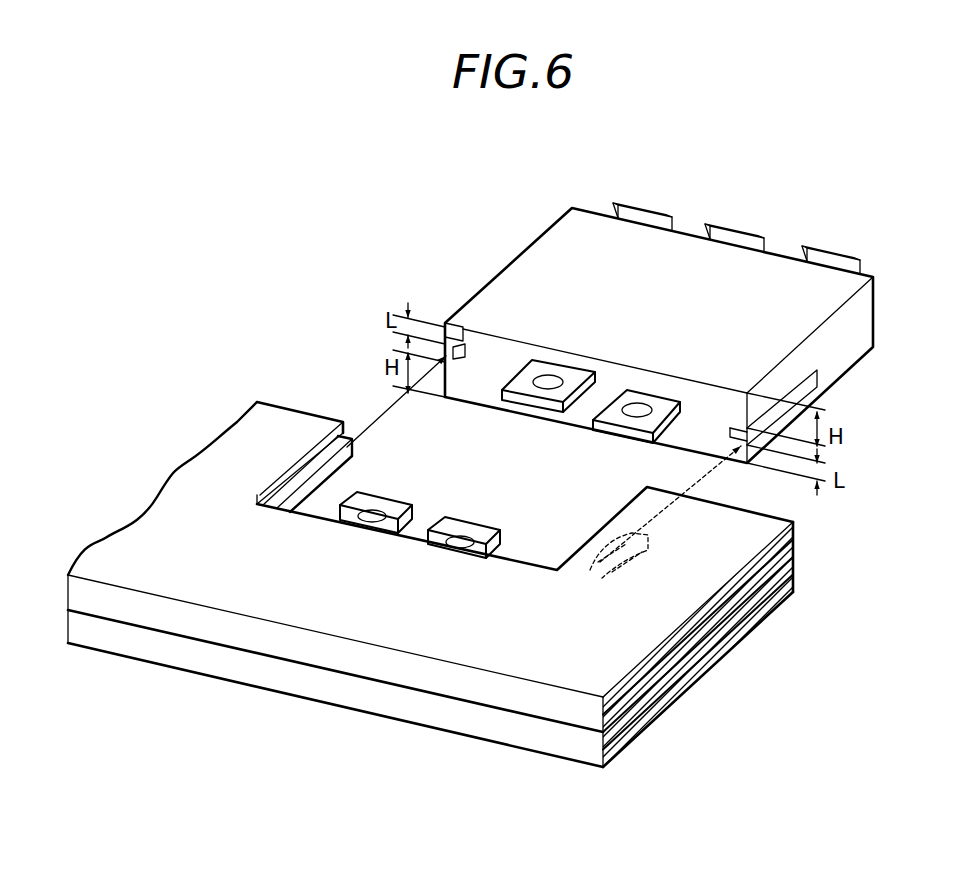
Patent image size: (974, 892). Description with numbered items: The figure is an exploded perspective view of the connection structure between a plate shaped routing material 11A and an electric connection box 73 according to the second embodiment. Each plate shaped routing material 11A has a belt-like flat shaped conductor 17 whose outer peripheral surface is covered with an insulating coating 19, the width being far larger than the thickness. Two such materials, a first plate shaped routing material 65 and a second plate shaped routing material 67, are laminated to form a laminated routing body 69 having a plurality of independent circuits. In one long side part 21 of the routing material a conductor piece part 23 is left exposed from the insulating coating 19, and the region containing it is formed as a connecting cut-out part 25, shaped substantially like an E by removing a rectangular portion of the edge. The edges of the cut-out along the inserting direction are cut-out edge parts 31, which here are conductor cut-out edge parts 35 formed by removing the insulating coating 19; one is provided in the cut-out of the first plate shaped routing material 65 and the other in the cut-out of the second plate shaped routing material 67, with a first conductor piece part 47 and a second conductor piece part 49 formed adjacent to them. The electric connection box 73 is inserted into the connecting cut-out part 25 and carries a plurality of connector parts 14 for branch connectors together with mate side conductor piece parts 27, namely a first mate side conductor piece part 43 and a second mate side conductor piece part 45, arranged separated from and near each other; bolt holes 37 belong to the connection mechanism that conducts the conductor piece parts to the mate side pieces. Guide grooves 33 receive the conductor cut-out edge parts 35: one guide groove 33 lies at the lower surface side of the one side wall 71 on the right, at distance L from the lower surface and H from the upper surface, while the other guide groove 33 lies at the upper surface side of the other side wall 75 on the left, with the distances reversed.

The connector part 14 is at (636, 214).
The flat shaped conductor 17 is at (690, 700).
The insulating coating 19 is at (140, 553).
The long side part 21 is at (292, 408).
The conductor piece part 23 is at (470, 494).
The connecting cut-out part 25 is at (622, 477).
The mate side conductor piece part 27 is at (617, 350).
The cut-out edge part 31 is at (404, 580).
The guide groove 33 is at (456, 338).
The conductor cut-out edge part 35 is at (306, 470).
The bolt hole 37 is at (553, 380).
The first mate side conductor piece part 43 is at (670, 393).
The second mate side conductor piece part 45 is at (543, 365).
The first conductor piece part 47 is at (490, 540).
The second conductor piece part 49 is at (405, 508).
The first plate shaped routing material 65 is at (760, 641).
The second plate shaped routing material 67 is at (805, 528).
The laminated routing body 69 is at (812, 589).
The one side wall 71 is at (853, 318).
The electric connection box 73 is at (760, 280).
The other side wall 75 is at (563, 245).
The plate shaped routing material 11A is at (788, 637).